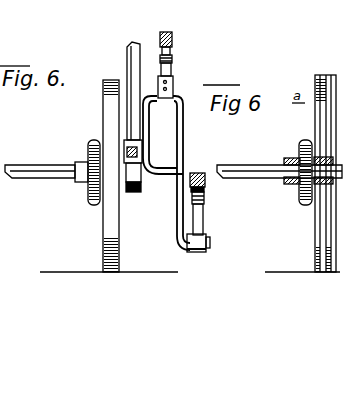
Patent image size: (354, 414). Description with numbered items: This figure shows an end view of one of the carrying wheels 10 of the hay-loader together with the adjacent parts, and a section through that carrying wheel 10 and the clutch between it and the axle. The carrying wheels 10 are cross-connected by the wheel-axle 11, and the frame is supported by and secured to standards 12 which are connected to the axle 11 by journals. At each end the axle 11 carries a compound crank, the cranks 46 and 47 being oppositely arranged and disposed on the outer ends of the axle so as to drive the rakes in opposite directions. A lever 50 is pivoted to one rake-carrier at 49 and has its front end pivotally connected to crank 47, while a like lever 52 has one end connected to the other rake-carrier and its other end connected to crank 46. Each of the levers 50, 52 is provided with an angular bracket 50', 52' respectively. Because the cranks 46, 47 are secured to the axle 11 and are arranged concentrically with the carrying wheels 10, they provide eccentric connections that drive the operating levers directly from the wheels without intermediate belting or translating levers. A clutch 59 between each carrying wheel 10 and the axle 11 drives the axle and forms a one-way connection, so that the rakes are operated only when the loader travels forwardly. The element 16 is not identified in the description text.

In FIG. 6, the carrying wheel 10 is at (102, 263).
In FIG. 6a, the carrying wheel 10 is at (311, 270).
In FIG. 6, the axle 11 is at (32, 179).
In FIG. 6a, the axle 11 is at (263, 179).
In FIG. 6, the standard 12 is at (127, 50).
In FIG. 6, the slide block 16 is at (132, 193).
In FIG. 6, the crank 46 is at (184, 96).
In FIG. 6, the crank 47 is at (171, 244).
In FIG. 6, the pivot 49 is at (0, 118).
In FIG. 6, the lever 50 is at (211, 186).
In FIG. 6, the angular bracket 50' is at (218, 237).
In FIG. 6, the lever 52 is at (188, 51).
In FIG. 6, the angular bracket 52' is at (206, 69).
In FIG. 6, the clutch 59 is at (91, 203).
In FIG. 6a, the clutch 59 is at (298, 203).